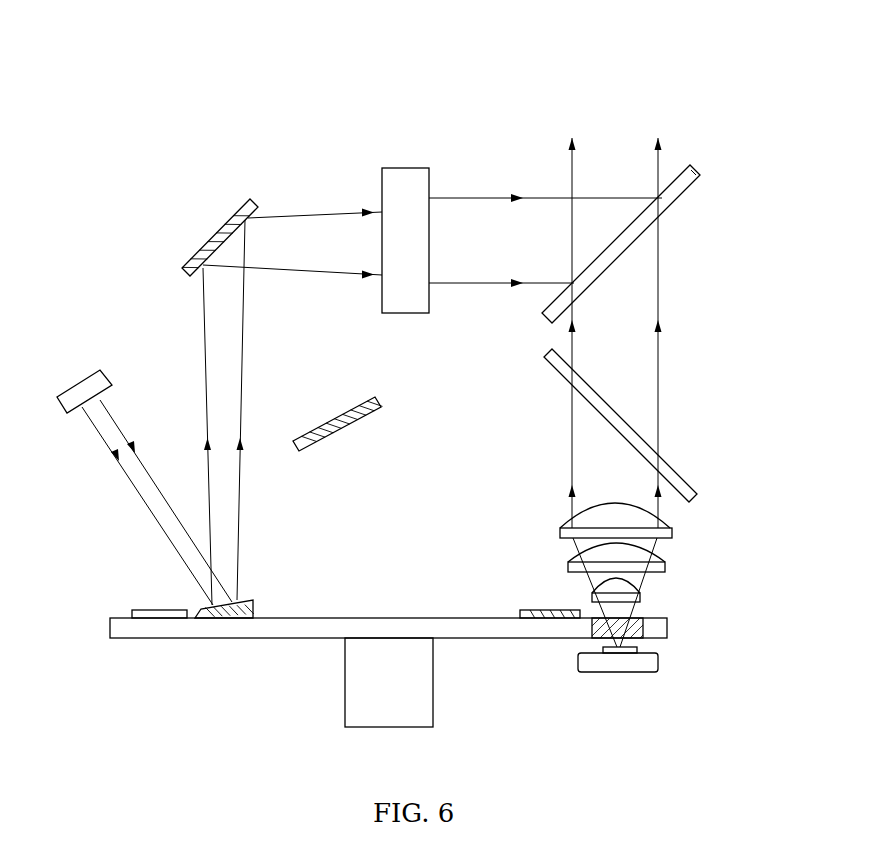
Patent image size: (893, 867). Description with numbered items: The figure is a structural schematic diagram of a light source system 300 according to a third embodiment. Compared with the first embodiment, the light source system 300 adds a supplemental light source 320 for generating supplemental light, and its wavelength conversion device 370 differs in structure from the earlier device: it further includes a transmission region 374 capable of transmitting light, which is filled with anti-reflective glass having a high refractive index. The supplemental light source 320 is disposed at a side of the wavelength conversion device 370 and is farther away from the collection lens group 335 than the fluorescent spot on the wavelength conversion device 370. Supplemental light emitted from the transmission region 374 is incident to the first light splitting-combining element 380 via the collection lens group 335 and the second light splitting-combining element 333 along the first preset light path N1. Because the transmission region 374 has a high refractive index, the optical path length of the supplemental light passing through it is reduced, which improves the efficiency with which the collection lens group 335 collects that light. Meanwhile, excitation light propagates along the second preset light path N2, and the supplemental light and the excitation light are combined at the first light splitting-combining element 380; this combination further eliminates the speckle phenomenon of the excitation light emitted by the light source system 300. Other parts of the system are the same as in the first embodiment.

The light source system 300 is at (414, 33).
The first light splitting-combining element 380 is at (693, 172).
The second light splitting-combining element 333 is at (667, 464).
The collection lens group 335 is at (640, 600).
The transmission region 374 is at (641, 618).
The supplemental light source 320 is at (625, 672).
The wavelength conversion device 370 is at (197, 650).
The first preset light path N1 is at (597, 333).
The second preset light path N2 is at (242, 412).